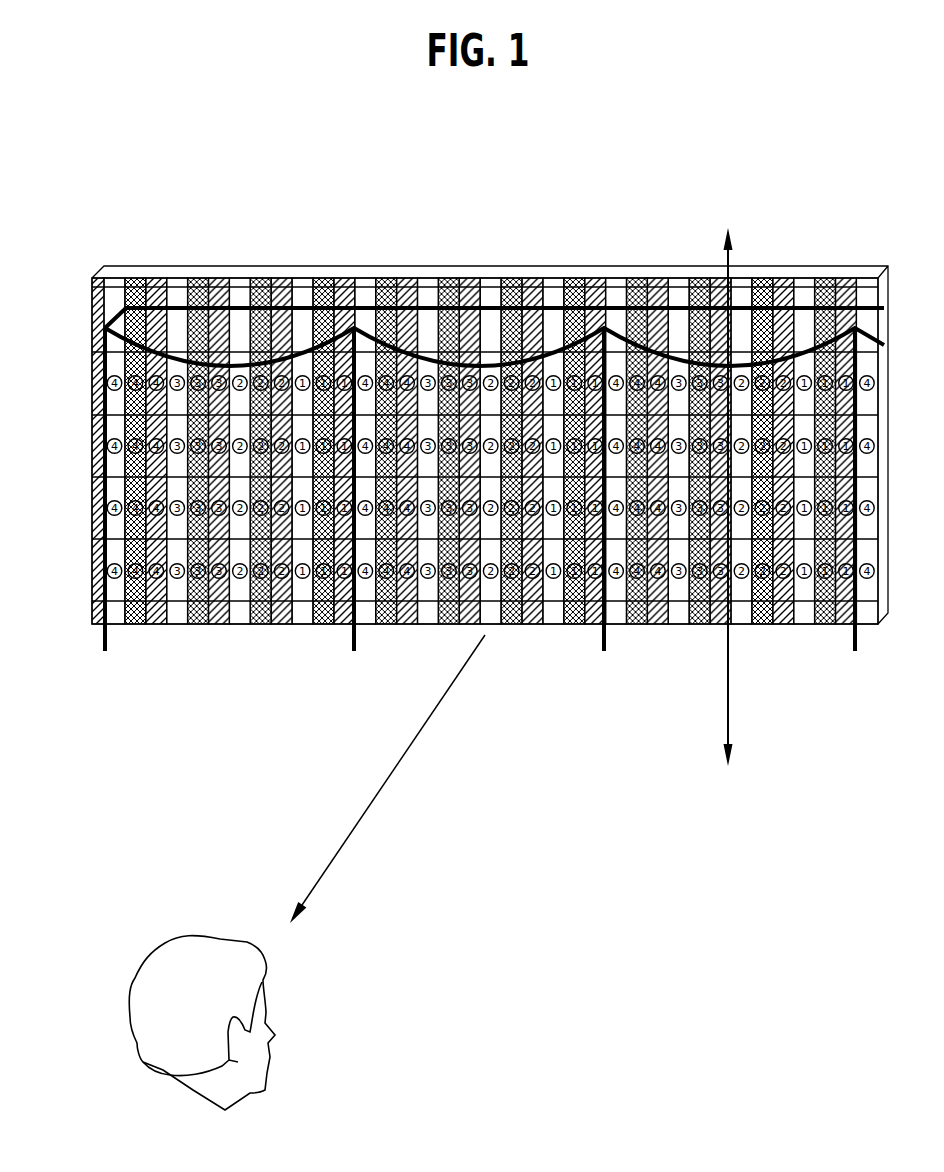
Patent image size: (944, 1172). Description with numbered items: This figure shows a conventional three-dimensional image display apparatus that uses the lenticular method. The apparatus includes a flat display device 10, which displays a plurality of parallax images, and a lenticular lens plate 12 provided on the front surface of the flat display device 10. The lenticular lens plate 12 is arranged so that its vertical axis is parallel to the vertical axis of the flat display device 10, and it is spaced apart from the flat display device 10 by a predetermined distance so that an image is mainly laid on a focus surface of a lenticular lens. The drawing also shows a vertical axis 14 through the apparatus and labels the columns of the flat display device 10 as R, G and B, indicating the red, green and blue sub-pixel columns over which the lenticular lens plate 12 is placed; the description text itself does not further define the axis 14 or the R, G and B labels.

The flat display device 10 is at (521, 277).
The lenticular lens plate 12 is at (105, 641).
The center axis 14 is at (728, 695).
The red sub-pixel R is at (157, 278).
The green sub-pixel G is at (177, 283).
The blue sub-pixel B is at (198, 278).